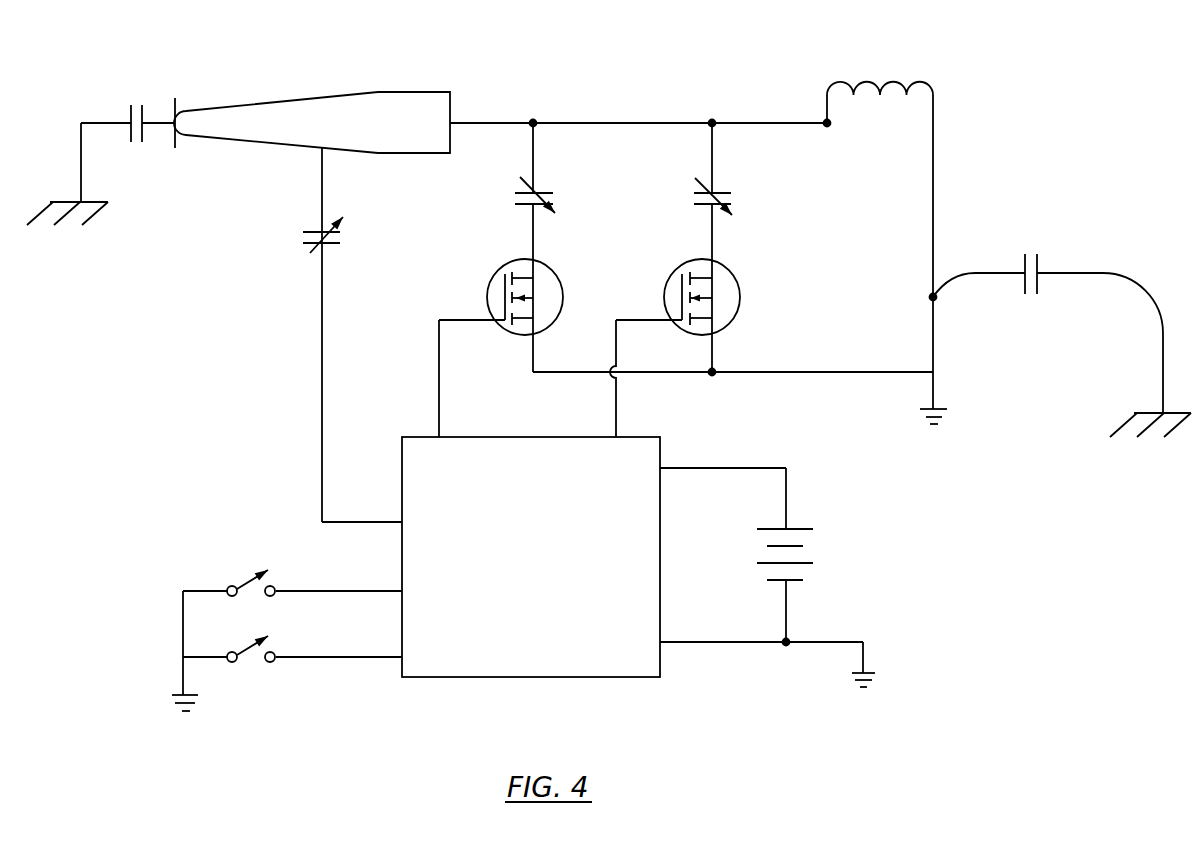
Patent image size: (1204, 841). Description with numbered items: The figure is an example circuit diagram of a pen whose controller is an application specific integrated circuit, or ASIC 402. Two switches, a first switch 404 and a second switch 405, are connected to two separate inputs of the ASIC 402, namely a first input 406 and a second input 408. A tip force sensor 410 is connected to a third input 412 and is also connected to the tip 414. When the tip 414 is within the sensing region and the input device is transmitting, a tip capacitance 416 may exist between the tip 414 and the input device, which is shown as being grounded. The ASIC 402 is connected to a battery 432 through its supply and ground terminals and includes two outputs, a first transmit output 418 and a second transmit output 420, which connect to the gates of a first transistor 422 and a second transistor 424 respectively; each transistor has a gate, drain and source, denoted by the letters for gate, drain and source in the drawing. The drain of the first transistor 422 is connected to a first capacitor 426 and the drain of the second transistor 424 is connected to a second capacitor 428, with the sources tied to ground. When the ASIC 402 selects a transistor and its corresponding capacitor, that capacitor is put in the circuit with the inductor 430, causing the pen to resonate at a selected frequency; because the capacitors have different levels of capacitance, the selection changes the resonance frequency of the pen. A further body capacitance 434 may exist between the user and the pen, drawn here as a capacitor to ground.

The application specific integrated circuit 402 is at (628, 604).
The switch Sw1 404 is at (138, 583).
The switch Sw2 405 is at (130, 640).
The input In1 406 is at (448, 591).
The input In2 408 is at (450, 647).
The tip force sensor 410 is at (229, 300).
The input In3 412 is at (451, 516).
The tip 414 is at (353, 110).
The capacitance 416 is at (133, 70).
The output Tx1 418 is at (460, 462).
The output Tx2 420 is at (641, 446).
The transistor Q1 422 is at (488, 275).
The transistor Q2 424 is at (665, 268).
The capacitor Ct1 426 is at (514, 188).
The capacitor Ct2 428 is at (693, 182).
The inductor 430 is at (897, 50).
The battery Bt1 432 is at (820, 553).
The capacitance Cbody 434 is at (1045, 212).